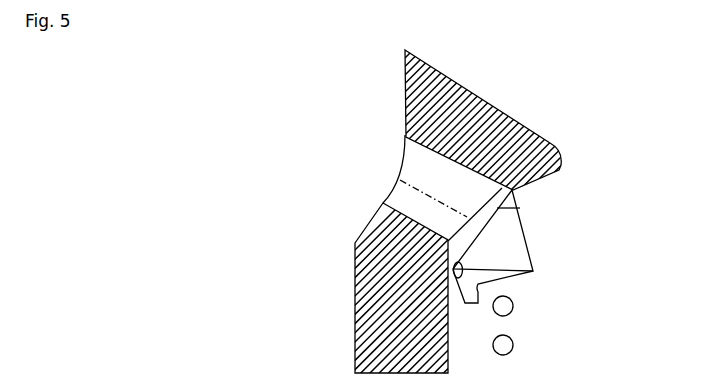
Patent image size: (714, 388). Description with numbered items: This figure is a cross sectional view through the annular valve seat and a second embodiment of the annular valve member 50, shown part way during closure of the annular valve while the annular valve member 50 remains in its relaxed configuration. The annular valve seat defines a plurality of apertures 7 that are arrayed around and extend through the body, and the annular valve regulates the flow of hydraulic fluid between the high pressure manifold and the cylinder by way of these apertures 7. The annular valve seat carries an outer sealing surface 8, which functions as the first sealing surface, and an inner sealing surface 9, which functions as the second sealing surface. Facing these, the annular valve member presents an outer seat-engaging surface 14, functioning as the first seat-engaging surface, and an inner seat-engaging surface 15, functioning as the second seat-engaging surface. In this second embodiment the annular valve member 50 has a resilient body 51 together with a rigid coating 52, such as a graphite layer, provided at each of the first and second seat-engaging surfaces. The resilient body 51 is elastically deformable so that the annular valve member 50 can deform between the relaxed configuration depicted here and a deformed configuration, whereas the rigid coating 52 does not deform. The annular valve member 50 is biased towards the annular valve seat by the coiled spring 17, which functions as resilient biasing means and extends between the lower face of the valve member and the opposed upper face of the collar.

The apertures 7 is at (423, 198).
The outer sealing surface 8 is at (518, 188).
The inner sealing surface 9 is at (448, 270).
The outer seat-engaging surface 14 is at (512, 202).
The inner seat-engaging surface 15 is at (530, 271).
The coiled spring 17 is at (508, 308).
The annular valve member 50 is at (533, 258).
The resilient body 51 is at (510, 248).
The rigid coating 52 is at (512, 202).